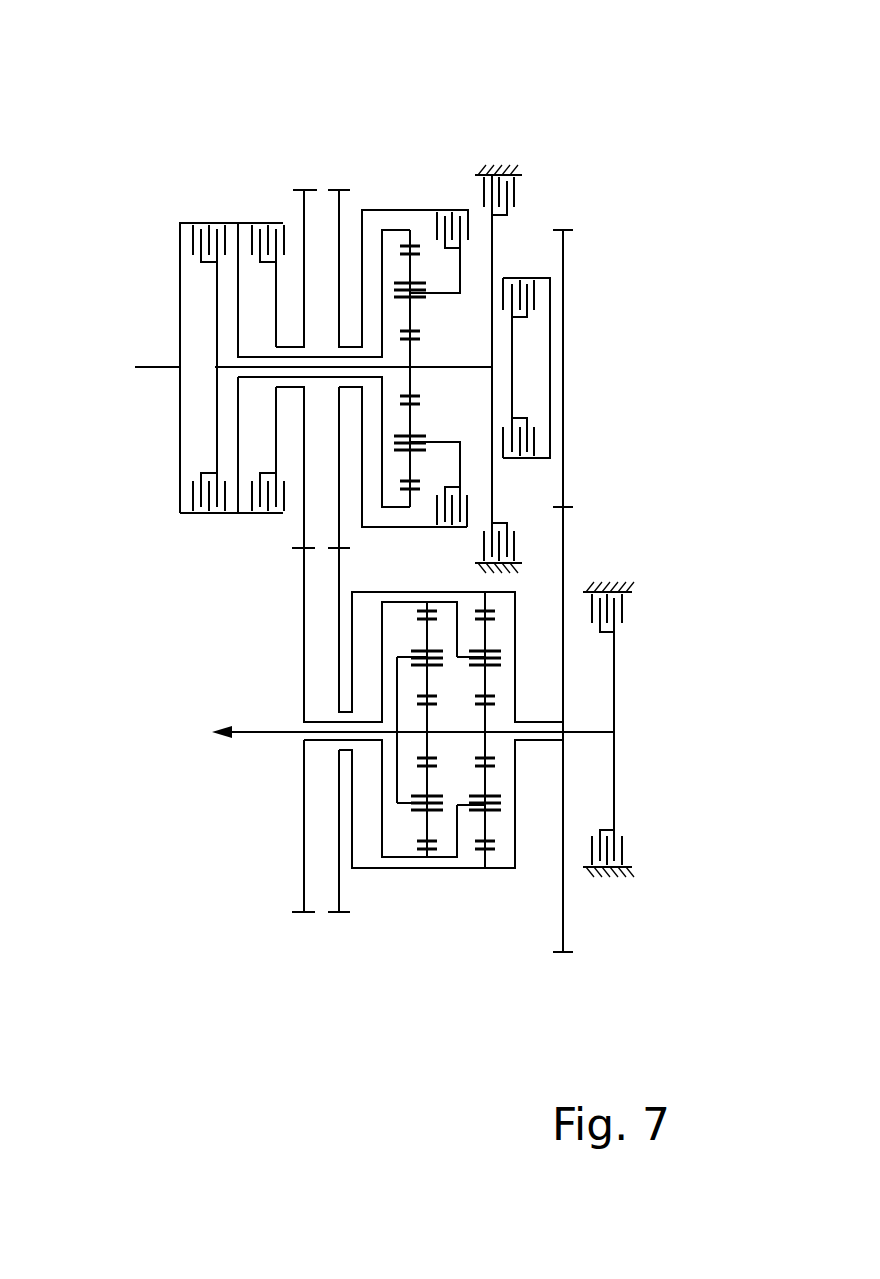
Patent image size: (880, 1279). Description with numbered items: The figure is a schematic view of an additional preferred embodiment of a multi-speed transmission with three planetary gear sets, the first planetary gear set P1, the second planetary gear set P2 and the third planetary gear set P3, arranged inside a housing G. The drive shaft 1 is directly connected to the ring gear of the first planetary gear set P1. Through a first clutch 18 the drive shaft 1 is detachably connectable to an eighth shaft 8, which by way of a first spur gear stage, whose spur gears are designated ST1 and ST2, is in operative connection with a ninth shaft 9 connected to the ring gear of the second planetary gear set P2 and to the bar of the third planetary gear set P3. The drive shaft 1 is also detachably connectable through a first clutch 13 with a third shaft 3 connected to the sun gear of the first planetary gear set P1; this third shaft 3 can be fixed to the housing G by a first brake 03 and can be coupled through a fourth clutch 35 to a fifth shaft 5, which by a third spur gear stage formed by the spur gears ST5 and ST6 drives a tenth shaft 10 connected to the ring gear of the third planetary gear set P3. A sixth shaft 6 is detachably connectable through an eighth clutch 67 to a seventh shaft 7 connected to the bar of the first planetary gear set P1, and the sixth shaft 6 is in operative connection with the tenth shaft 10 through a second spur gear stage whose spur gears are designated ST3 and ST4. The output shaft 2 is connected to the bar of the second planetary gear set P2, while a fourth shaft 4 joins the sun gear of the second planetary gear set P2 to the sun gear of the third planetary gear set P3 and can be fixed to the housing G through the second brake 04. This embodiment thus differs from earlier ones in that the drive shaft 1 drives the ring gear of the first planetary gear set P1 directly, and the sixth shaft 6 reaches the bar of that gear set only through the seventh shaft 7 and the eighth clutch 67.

The drive shaft 1 is at (145, 365).
The output shaft 2 is at (257, 733).
The third shaft 3 is at (495, 372).
The fourth shaft 4 is at (585, 730).
The fifth shaft 5 is at (566, 313).
The sixth shaft 6 is at (385, 530).
The seventh shaft 7 is at (462, 462).
The eighth shaft 8 is at (300, 512).
The ninth shaft 9 is at (300, 678).
The tenth shaft 10 is at (565, 550).
The first clutch 13 is at (190, 242).
The first clutch 18 is at (258, 222).
The fourth clutch 35 is at (535, 290).
The eighth clutch 67 is at (445, 208).
The first brake 03 is at (520, 190).
The second brake 04 is at (622, 622).
The housing G is at (620, 578).
The first planetary gear set P1 is at (412, 180).
The second planetary gear set P2 is at (425, 915).
The third planetary gear set P3 is at (485, 915).
The first spur gear of the first spur gear stage ST1 is at (297, 188).
The second spur gear of the first spur gear stage ST2 is at (292, 915).
The first spur gear of the second spur gear stage ST3 is at (330, 188).
The second spur gear of the second spur gear stage ST4 is at (340, 915).
The first spur gear of the third spur gear stage ST5 is at (572, 228).
The second spur gear of the third spur gear stage ST6 is at (565, 958).